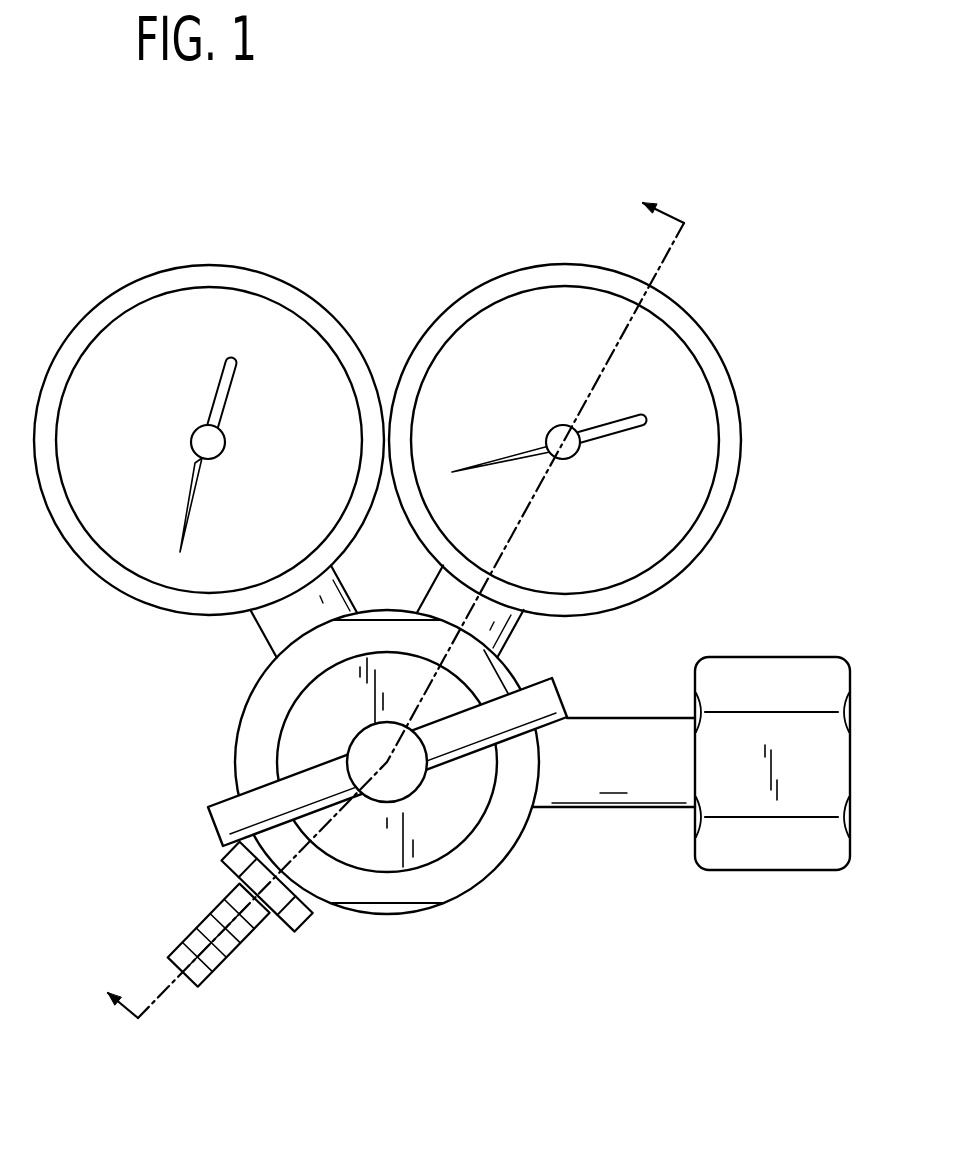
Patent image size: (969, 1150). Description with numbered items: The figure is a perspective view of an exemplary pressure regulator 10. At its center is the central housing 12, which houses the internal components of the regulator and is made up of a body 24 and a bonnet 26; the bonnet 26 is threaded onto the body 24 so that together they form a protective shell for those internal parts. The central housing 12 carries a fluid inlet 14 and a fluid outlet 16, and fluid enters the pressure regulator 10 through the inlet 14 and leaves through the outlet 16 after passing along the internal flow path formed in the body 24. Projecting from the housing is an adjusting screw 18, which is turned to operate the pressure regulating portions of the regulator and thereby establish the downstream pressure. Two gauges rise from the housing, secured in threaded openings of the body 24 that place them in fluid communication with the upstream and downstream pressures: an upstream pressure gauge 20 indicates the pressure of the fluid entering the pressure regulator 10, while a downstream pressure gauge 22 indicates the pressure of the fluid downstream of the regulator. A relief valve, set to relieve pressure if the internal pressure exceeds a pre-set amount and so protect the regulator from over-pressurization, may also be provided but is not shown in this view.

The pressure regulator 10 is at (545, 157).
The central housing 12 is at (503, 873).
The fluid inlet 14 is at (772, 656).
The fluid outlet 16 is at (215, 912).
The adjusting screw 18 is at (370, 753).
The upstream pressure gauge 20 is at (738, 442).
The downstream pressure gauge 22 is at (87, 318).
The body 24 is at (382, 915).
The bonnet 26 is at (450, 873).